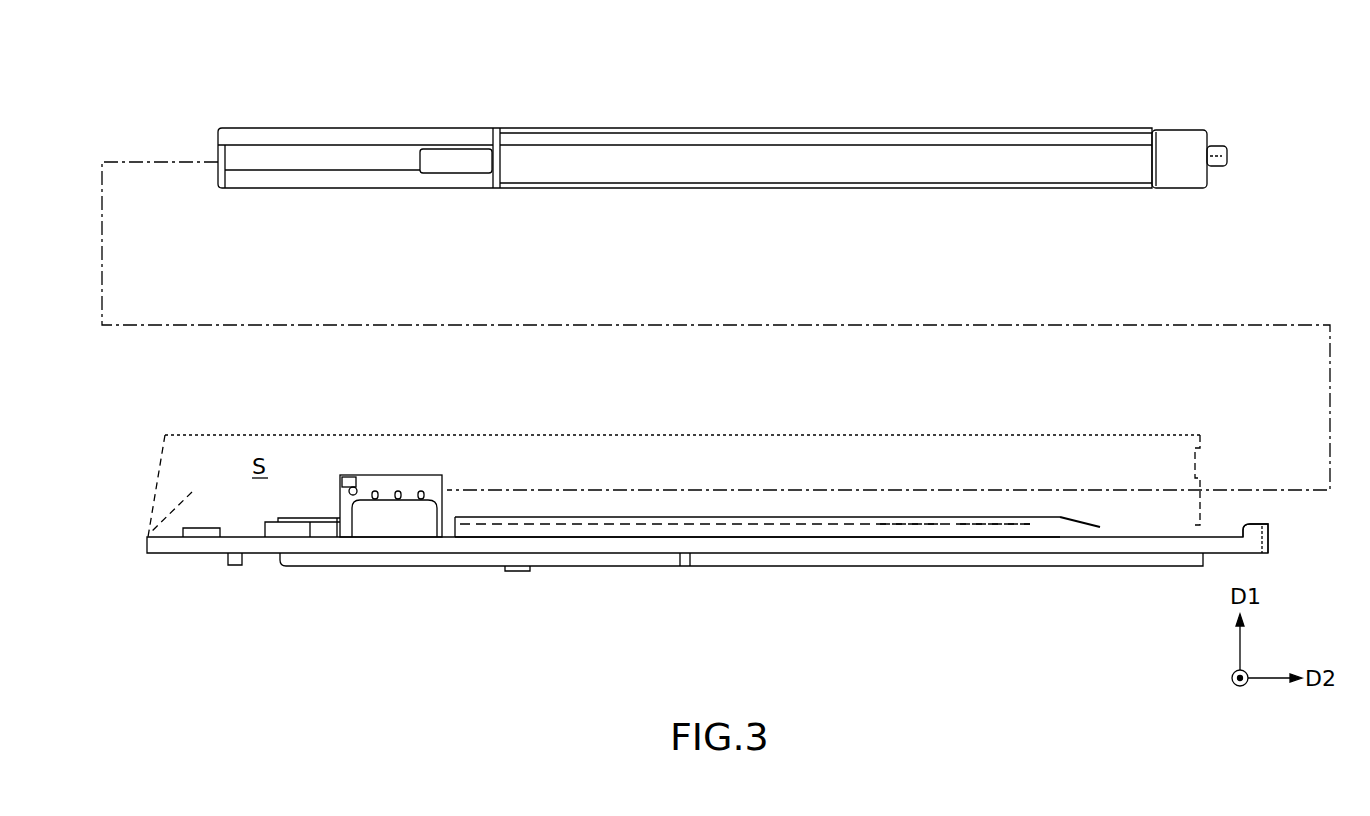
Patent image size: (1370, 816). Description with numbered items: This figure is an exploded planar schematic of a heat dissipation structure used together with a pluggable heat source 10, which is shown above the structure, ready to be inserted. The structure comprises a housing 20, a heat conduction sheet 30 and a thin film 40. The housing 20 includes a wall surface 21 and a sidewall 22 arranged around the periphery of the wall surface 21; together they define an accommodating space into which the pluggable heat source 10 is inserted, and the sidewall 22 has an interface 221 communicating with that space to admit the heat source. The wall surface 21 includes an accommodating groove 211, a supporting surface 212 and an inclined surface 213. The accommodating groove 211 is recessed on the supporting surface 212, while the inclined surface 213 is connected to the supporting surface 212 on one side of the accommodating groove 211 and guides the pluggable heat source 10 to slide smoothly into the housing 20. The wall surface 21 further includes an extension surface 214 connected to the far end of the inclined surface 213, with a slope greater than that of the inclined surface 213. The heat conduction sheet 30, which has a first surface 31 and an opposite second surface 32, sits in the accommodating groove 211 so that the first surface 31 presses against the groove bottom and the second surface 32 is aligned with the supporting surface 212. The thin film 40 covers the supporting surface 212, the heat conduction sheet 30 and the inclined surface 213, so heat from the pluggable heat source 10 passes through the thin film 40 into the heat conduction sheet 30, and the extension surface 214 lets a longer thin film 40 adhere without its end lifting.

The pluggable heat source 10 is at (1110, 128).
The housing 20 is at (210, 614).
The wall surface 21 is at (215, 546).
The sidewall 22 is at (148, 537).
The interface 221 is at (1195, 478).
The accommodating groove 211 is at (520, 527).
The supporting surface 212 is at (448, 530).
The inclined surface 213 is at (1076, 520).
The extension surface 214 is at (1102, 528).
The heat conduction sheet 30 is at (618, 524).
The first surface 31 is at (915, 524).
The second surface 32 is at (990, 522).
The thin film 40 is at (722, 518).